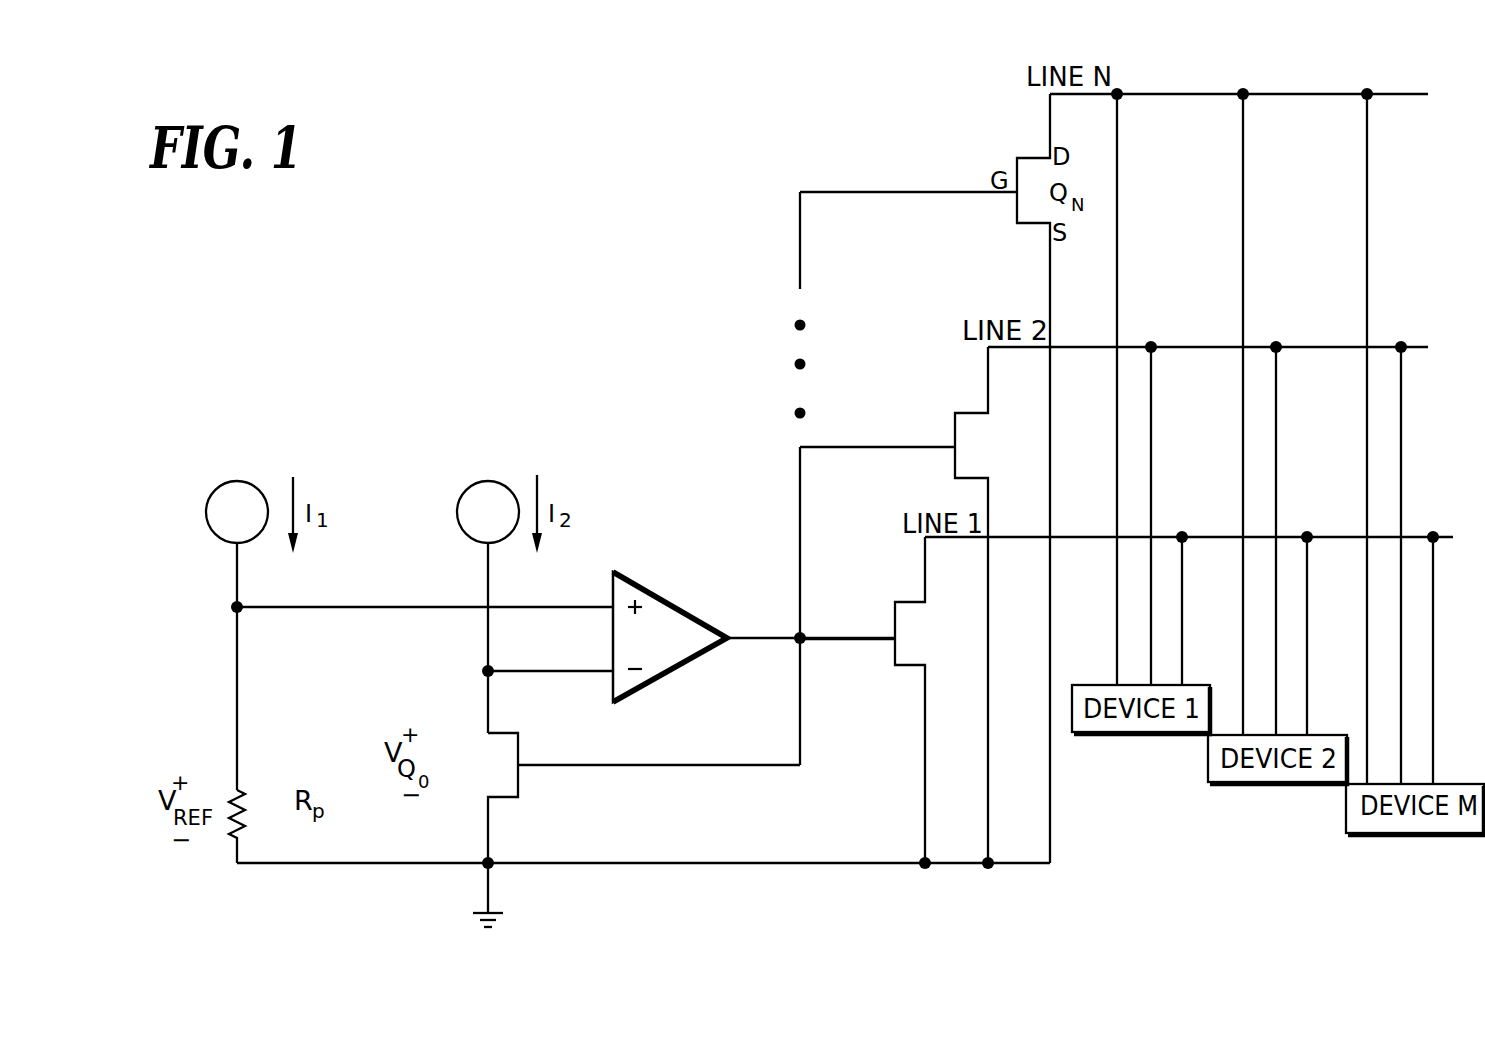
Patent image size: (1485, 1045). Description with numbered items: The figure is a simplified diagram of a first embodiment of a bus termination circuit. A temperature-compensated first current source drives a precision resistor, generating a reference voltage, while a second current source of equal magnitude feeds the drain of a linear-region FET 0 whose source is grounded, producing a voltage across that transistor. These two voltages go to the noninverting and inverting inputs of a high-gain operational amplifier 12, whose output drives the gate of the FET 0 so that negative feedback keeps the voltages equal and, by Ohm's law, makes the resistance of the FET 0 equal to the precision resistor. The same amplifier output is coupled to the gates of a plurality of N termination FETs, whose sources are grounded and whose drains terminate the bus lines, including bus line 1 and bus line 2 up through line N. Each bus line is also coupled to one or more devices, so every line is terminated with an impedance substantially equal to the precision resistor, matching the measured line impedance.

The operational amplifier 12 is at (661, 574).
The linear-region FET 0 is at (627, 786).
The bus signal line 1 is at (878, 700).
The bus signal line 2 is at (908, 605).